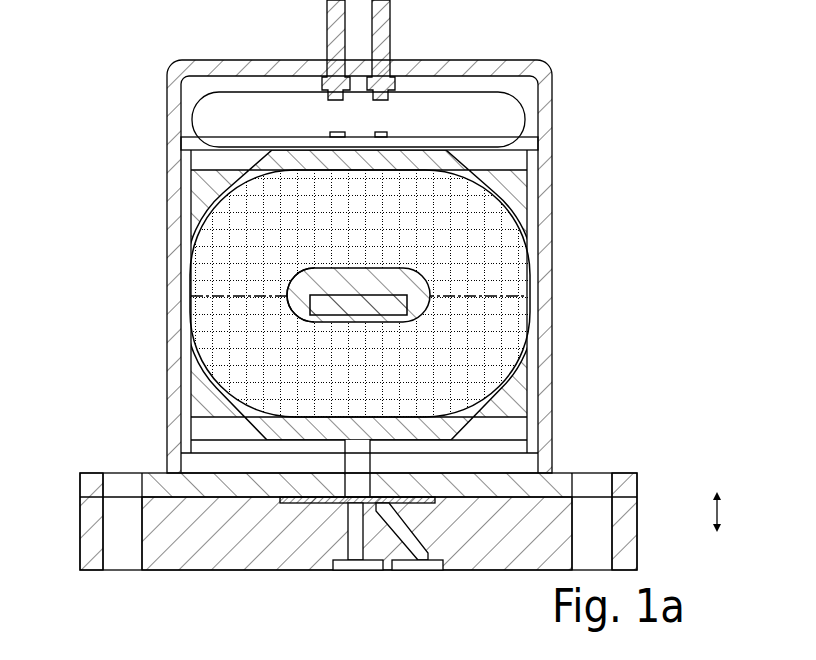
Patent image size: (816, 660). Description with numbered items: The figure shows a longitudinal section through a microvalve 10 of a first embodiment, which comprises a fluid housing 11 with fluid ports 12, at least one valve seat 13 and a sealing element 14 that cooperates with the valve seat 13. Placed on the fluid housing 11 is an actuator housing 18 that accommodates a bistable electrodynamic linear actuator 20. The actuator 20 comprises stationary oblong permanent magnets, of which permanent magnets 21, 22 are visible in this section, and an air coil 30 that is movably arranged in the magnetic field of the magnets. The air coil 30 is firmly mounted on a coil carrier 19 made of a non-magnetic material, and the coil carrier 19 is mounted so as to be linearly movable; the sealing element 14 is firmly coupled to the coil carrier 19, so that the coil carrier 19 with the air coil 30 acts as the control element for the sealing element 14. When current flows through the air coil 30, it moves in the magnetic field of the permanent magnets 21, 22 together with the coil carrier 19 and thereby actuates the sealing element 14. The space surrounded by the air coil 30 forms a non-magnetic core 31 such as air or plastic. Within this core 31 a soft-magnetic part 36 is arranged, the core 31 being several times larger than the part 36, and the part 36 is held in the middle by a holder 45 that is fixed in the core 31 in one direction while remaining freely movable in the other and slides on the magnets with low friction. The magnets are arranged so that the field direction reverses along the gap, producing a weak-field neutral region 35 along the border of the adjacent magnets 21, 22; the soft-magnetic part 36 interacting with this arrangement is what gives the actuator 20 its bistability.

The microvalve 10 is at (106, 74).
The fluid housing 11 is at (195, 570).
The fluid ports 12 is at (418, 570).
The valve seat 13 is at (327, 570).
The sealing element 14 is at (435, 497).
The actuator housing 18 is at (162, 138).
The coil carrier 19 is at (240, 412).
The bistable electrodynamic linear actuator 20 is at (578, 250).
The permanent magnet 21 is at (508, 393).
The permanent magnet 22 is at (518, 173).
The air coil 30 is at (548, 316).
The non-magnetic core 31 is at (287, 268).
The neutral region 35 is at (288, 300).
The soft-magnetic part 36 is at (305, 308).
The holder 45 is at (287, 268).